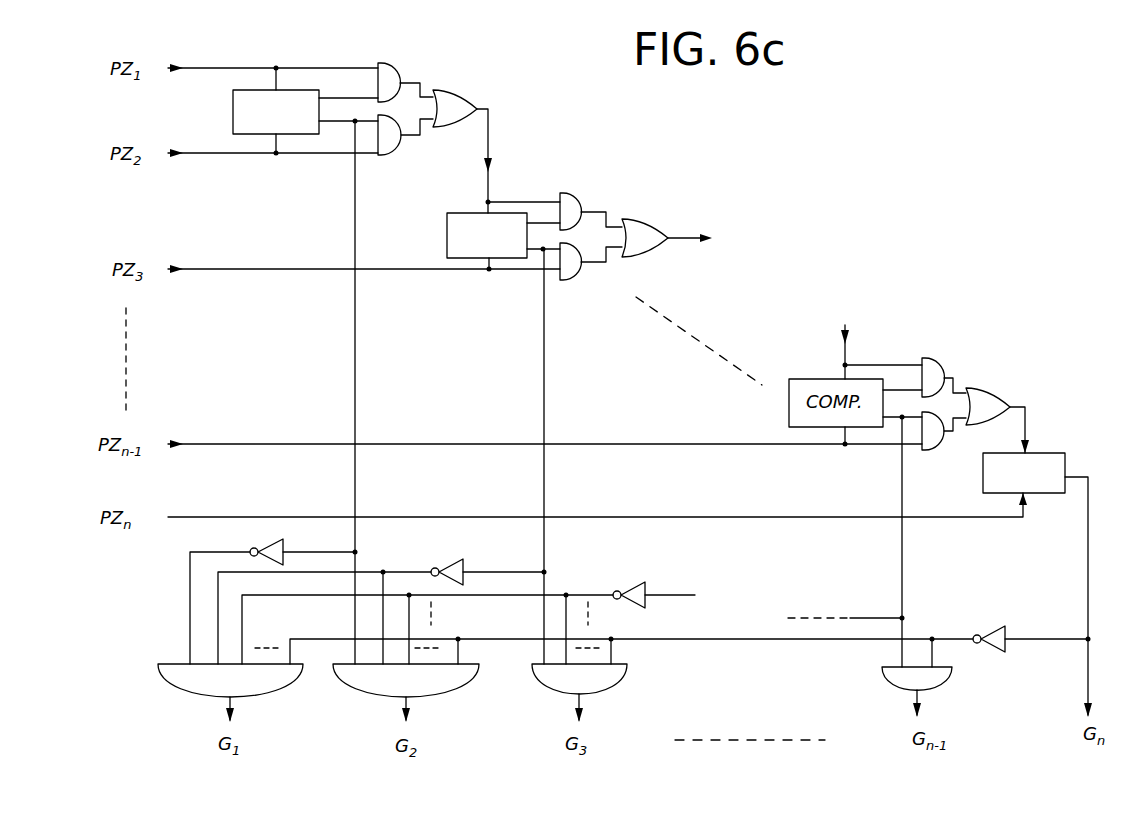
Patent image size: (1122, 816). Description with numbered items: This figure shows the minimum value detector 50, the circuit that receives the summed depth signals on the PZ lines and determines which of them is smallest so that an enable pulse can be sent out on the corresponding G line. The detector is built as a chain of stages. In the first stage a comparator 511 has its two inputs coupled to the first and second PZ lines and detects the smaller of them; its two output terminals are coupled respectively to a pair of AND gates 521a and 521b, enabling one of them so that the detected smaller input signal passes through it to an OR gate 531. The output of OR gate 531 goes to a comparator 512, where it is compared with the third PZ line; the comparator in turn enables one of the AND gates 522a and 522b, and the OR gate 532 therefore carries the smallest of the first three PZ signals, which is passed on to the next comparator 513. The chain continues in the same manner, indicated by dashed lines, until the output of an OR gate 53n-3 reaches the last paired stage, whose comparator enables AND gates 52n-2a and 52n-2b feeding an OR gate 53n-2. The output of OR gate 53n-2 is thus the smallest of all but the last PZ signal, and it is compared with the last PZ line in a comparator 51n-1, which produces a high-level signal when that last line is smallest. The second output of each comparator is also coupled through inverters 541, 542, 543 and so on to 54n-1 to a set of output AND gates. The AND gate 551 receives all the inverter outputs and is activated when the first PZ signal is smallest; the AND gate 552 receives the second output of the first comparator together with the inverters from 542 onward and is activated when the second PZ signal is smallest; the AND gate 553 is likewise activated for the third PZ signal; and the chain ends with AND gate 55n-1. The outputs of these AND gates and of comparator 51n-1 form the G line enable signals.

The minimum value detector 50 is at (942, 167).
The comparator 511 is at (233, 101).
The comparator 512 is at (447, 243).
The comparator 513 is at (778, 240).
The comparator 51n-1 is at (1047, 453).
The AND gate 521a is at (397, 63).
The AND gate 521b is at (393, 148).
The AND gate 522a is at (562, 197).
The AND gate 522b is at (573, 275).
The AND gate 52n-2a is at (937, 368).
The AND gate 52n-2b is at (940, 450).
The OR gate 531 is at (467, 90).
The OR gate 532 is at (643, 222).
The OR gate 53n-2 is at (1005, 393).
The OR gate 53n-3 is at (880, 310).
The inverter 541 is at (280, 537).
The inverter 542 is at (443, 565).
The inverter 543 is at (633, 588).
The inverter 54n-1 is at (992, 628).
The AND gate 551 is at (258, 691).
The AND gate 552 is at (438, 697).
The AND gate 553 is at (598, 691).
The AND gate 55n-1 is at (880, 676).